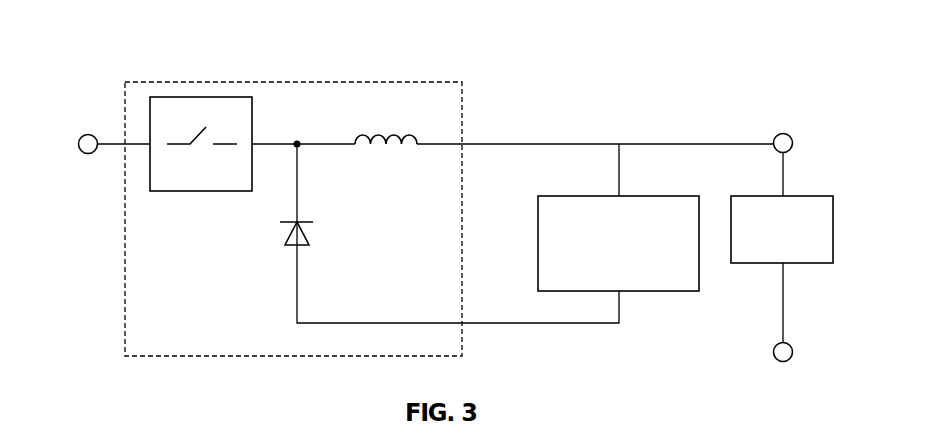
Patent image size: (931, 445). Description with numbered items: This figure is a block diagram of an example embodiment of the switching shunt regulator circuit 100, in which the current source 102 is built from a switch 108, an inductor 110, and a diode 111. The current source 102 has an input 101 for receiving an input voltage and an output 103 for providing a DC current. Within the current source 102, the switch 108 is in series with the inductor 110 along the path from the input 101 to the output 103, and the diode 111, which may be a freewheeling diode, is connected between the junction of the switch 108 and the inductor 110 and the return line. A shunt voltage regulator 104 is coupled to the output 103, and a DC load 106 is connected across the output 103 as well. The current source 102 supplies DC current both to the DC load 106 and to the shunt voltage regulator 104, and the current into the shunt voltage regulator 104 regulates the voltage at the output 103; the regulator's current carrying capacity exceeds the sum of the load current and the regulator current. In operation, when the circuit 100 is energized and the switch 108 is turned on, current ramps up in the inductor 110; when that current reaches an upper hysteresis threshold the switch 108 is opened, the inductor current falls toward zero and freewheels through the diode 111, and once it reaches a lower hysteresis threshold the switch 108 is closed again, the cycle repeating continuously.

The switching shunt regulator circuit 100 is at (121, 32).
The input 101 is at (87, 134).
The current source 102 is at (185, 82).
The output 103 is at (778, 133).
The shunt voltage regulator 104 is at (596, 196).
The DC load 106 is at (760, 196).
The switch 108 is at (199, 192).
The inductor 110 is at (378, 135).
The diode 111 is at (291, 250).